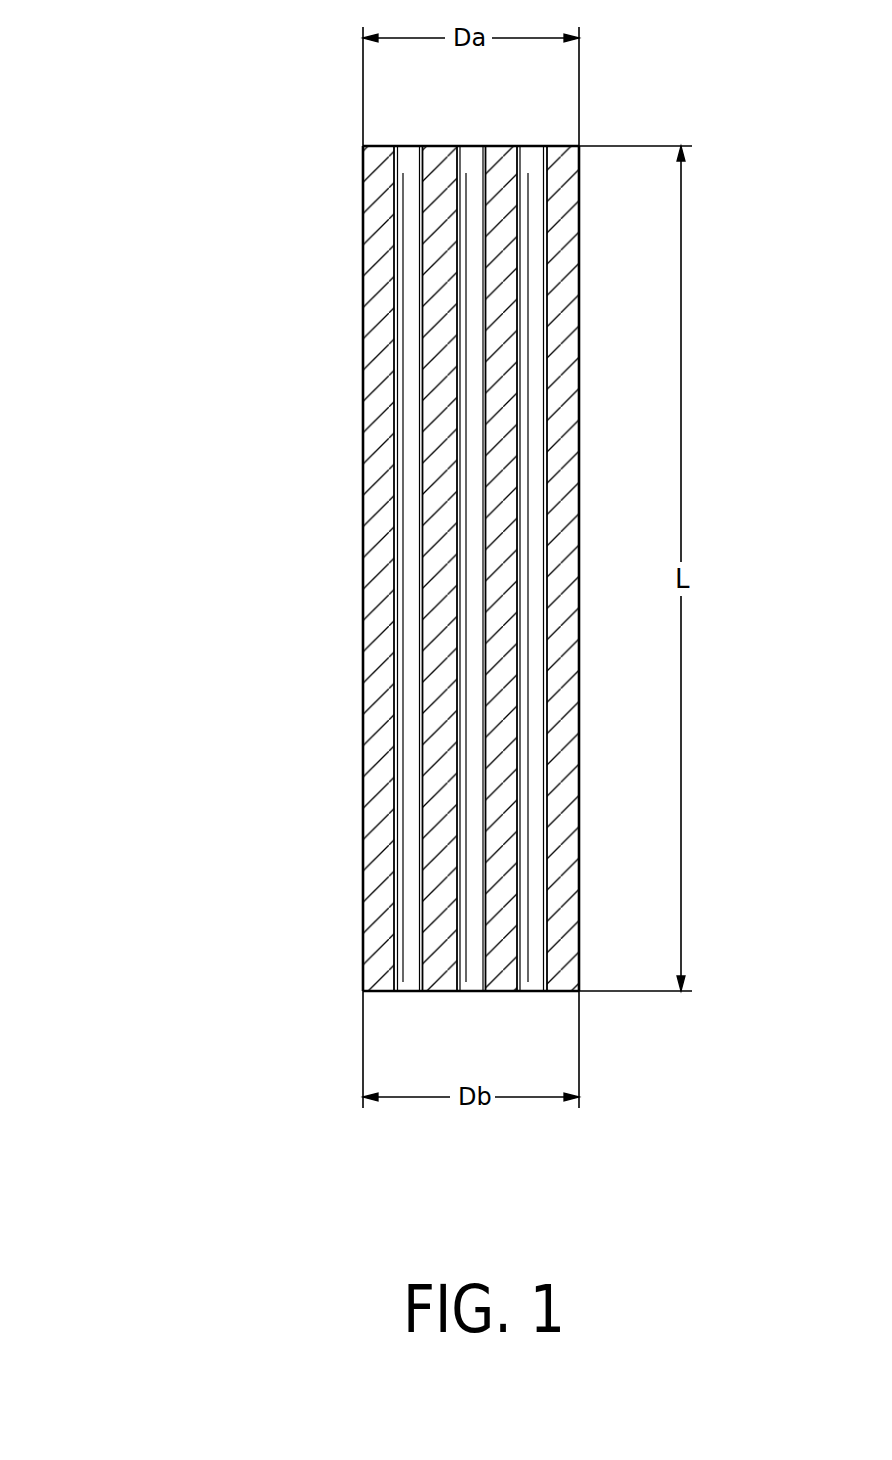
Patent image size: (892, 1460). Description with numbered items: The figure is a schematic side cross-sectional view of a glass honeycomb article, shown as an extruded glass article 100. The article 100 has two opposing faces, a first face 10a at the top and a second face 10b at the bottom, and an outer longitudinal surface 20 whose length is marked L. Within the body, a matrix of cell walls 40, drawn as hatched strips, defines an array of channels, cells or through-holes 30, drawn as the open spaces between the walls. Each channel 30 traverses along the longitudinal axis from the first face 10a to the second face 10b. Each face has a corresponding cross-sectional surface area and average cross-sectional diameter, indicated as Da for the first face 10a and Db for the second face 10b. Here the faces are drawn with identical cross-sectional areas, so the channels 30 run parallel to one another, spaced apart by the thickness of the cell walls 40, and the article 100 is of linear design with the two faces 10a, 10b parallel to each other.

The extruded glass article 100 is at (222, 158).
The outer longitudinal surface 20 is at (363, 315).
The cell walls 40 is at (382, 582).
The channels 30 is at (407, 782).
The first face 10a is at (503, 146).
The second face 10b is at (528, 991).